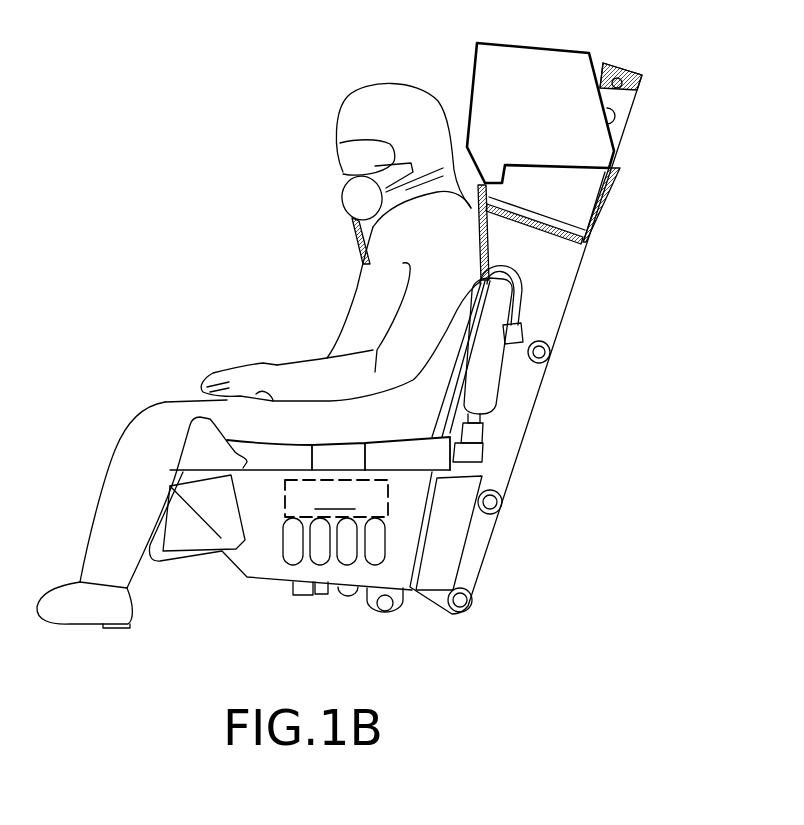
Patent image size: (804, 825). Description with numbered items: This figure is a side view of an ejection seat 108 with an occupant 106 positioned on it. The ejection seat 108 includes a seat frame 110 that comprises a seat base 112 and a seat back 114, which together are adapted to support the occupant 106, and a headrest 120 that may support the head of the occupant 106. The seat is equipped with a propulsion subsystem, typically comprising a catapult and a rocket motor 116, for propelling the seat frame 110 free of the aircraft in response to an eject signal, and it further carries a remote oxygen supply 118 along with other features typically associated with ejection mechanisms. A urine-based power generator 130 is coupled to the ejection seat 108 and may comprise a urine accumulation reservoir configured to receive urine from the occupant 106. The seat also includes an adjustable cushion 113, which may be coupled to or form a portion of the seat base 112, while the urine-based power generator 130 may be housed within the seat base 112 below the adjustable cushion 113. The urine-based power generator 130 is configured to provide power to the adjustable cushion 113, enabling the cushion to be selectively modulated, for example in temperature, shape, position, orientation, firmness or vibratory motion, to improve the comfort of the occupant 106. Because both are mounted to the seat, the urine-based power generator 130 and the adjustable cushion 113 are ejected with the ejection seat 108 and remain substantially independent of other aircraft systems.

The occupant 106 is at (140, 423).
The ejection seat 108 is at (553, 278).
The seat frame 110 is at (512, 452).
The seat base 112 is at (262, 553).
The adjustable cushion 113 is at (415, 455).
The seat back 114 is at (555, 307).
The rocket motor 116 is at (383, 613).
The remote oxygen supply 118 is at (482, 382).
The headrest 120 is at (580, 150).
The urine-based power generator 130 is at (335, 522).